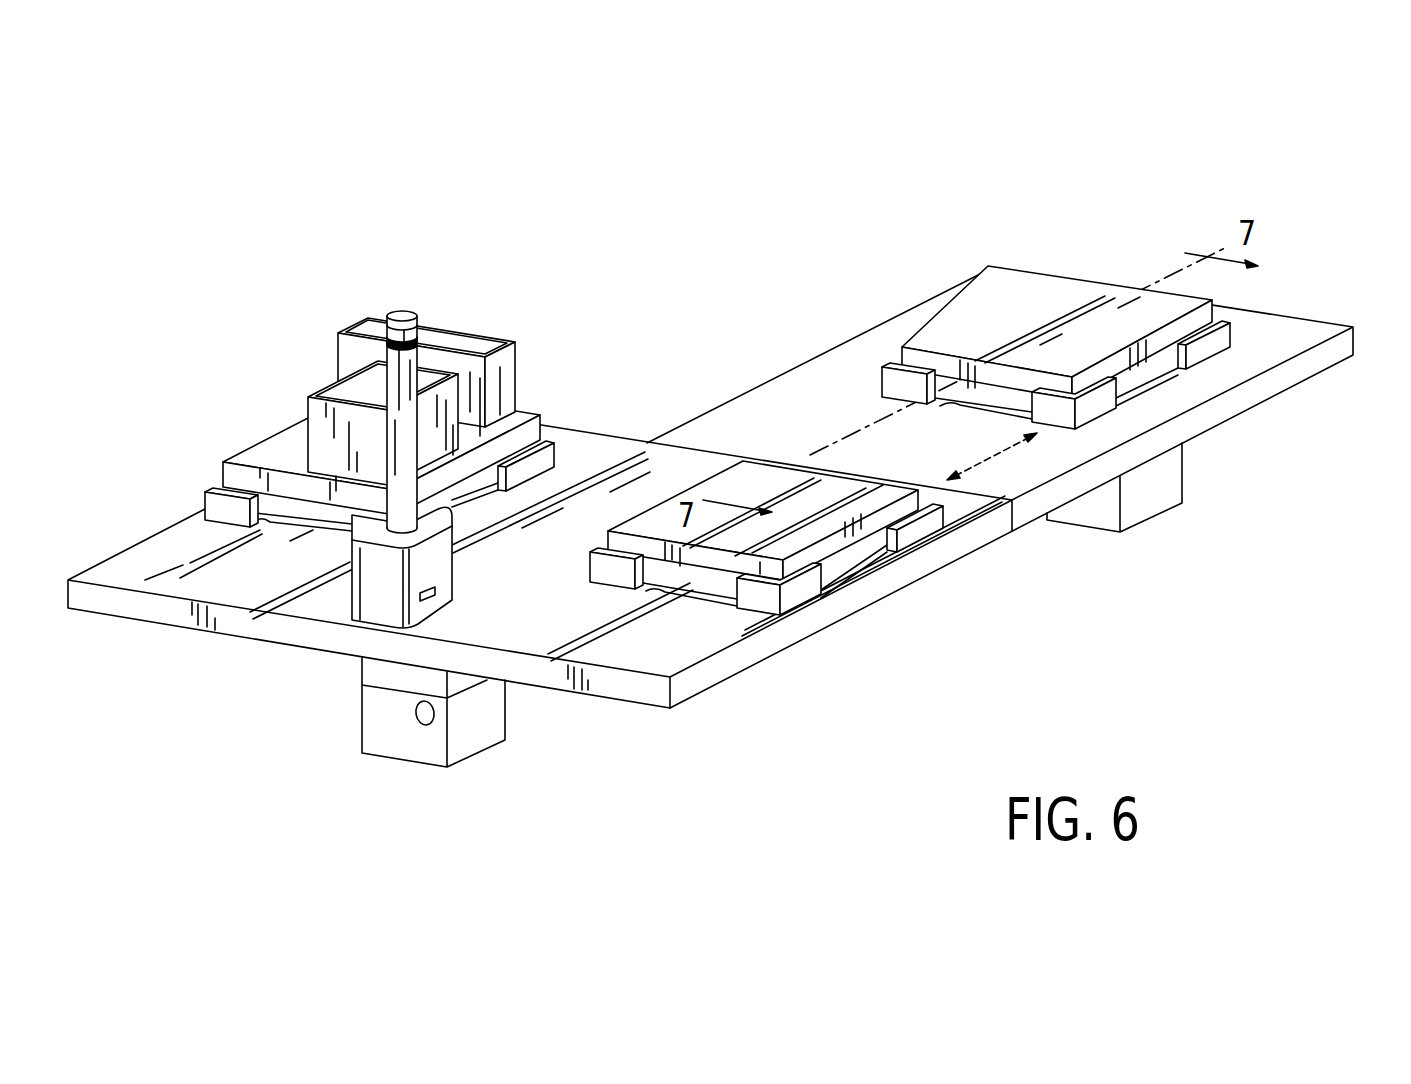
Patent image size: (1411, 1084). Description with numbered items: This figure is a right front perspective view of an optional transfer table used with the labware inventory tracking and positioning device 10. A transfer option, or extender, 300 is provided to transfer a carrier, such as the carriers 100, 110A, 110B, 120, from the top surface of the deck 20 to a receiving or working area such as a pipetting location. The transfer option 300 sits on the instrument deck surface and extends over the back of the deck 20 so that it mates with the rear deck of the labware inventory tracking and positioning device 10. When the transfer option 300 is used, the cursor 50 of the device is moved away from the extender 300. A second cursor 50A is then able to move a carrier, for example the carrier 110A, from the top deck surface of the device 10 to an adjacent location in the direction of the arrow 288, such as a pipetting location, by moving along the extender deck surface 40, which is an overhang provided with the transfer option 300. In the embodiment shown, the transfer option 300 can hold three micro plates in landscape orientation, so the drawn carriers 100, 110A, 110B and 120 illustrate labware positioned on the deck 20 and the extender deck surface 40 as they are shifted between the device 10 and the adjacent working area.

The labware inventory tracking and positioning device 10 is at (240, 370).
The deck 20 is at (127, 568).
The extender deck surface 40 is at (1300, 335).
The cursor 50 is at (472, 737).
The second cursor 50A is at (1165, 493).
The carrier 100 is at (432, 578).
The carrier 110A is at (912, 533).
The carrier 110B is at (1203, 348).
The carrier 120 is at (555, 442).
The arrow 288 is at (997, 453).
The transfer option 300 is at (903, 262).